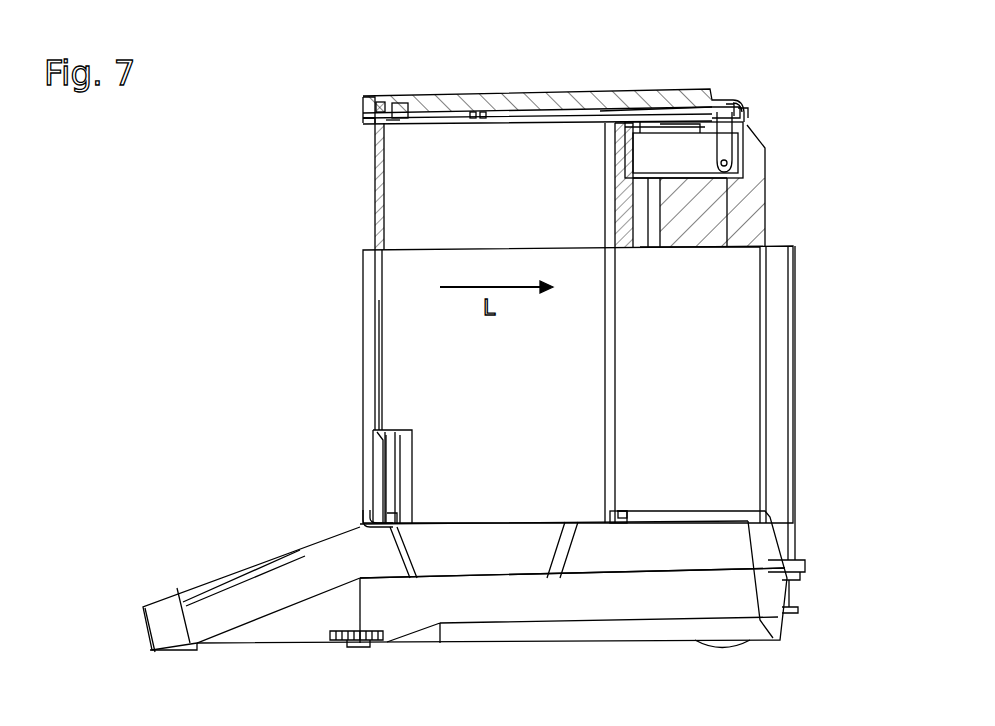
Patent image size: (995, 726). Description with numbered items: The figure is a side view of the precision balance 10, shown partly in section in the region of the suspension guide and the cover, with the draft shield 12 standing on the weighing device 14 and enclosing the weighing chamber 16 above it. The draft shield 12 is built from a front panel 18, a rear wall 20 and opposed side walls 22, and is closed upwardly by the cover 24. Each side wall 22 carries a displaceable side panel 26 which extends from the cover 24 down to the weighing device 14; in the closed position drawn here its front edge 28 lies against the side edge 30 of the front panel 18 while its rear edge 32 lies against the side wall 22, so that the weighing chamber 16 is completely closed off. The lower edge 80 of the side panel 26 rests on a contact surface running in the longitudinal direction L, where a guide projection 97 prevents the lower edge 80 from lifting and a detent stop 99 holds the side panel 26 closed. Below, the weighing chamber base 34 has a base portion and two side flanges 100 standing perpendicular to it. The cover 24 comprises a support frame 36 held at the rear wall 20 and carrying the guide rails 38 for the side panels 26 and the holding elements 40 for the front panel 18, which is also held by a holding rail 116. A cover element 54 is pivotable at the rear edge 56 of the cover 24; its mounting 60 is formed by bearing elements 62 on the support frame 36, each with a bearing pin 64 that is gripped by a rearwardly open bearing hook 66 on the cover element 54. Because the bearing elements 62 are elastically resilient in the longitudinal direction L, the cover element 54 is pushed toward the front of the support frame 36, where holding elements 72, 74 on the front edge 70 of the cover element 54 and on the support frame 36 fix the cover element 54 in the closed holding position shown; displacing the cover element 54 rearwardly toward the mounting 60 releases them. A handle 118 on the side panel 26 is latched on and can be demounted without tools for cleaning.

The precision balance 10 is at (615, 63).
The draft shield 12 is at (312, 283).
The weighing device 14 is at (290, 578).
The weighing chamber 16 is at (421, 199).
The front panel 18 is at (365, 373).
The rear wall 20 is at (790, 346).
The side wall 22 is at (741, 441).
The cover 24 is at (466, 94).
The side panel 26 is at (418, 465).
The front edge of side panel 28 is at (378, 415).
The side edge of front panel 30 is at (372, 330).
The rear edge of side panel 32 is at (613, 398).
The weighing chamber base 34 is at (488, 550).
The support frame 36 is at (663, 100).
The guide rail 38 is at (505, 103).
The holding element 40 is at (378, 96).
The cover element 54 is at (548, 94).
The rear edge of cover 56 is at (742, 110).
The mounting 60 is at (779, 132).
The bearing element 62 is at (733, 127).
The bearing pin 64 is at (750, 111).
The bearing hook 66 is at (733, 104).
The front edge of cover element 70 is at (370, 122).
The holding element 72 is at (396, 114).
The holding element 74 is at (393, 128).
The lower edge of side panel 80 is at (529, 527).
The guide projection 97 is at (620, 526).
The detent stop 99 is at (623, 515).
The side flange 100 is at (436, 566).
The holding rail 116 is at (366, 521).
The handle 118 is at (401, 440).